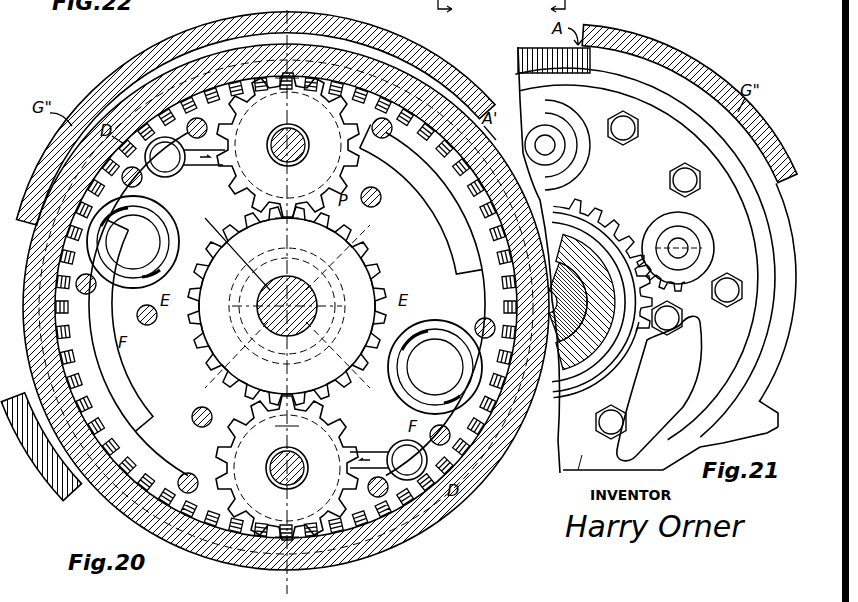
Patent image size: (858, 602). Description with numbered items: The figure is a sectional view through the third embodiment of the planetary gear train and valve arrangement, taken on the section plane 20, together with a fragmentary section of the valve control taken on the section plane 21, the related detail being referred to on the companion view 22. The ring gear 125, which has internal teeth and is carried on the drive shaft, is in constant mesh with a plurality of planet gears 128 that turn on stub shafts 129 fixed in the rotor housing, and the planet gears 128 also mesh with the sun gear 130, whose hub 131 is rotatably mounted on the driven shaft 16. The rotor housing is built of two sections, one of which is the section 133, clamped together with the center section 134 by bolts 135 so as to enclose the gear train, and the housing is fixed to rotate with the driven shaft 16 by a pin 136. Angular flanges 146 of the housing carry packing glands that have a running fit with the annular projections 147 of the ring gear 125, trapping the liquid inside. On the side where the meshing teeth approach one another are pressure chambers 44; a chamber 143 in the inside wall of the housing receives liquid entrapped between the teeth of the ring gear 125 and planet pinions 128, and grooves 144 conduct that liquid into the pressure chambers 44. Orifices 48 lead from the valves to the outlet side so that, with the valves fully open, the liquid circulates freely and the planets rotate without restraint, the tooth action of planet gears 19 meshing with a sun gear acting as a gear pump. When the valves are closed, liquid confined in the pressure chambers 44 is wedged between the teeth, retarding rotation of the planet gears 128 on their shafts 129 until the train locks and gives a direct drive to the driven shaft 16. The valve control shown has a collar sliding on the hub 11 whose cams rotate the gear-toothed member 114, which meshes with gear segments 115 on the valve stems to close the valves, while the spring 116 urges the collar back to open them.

In FIG. 21, the hub 11 is at (552, 382).
In FIG. 20, the driven shaft 16 is at (312, 272).
In FIG. 20, the planet gears 19 is at (289, 13).
In FIG. 20, the sun gear 20 is at (460, 12).
In FIG. 20, the section line 21 is at (545, 12).
In FIG. 20, the flange 22 is at (92, 56).
In FIG. 20, the pressure chambers 44 is at (172, 172).
In FIG. 20, the orifices 48 is at (100, 312).
In FIG. 21, the gear-toothed member 114 is at (622, 376).
In FIG. 21, the gear segments 115 is at (656, 214).
In FIG. 21, the spring 116 is at (580, 212).
In FIG. 20, the ring gear 125 is at (478, 455).
In FIG. 20, the planet gears 128 is at (287, 306).
In FIG. 20, the stub shafts 129 is at (293, 307).
In FIG. 20, the sun gear 130 is at (298, 378).
In FIG. 21, the hub 131 is at (592, 301).
In FIG. 20, the rotor housing section 133 is at (442, 214).
In FIG. 21, the rotor housing section 133 is at (578, 470).
In FIG. 20, the center section 134 is at (138, 304).
In FIG. 20, the bolts 135 is at (470, 258).
In FIG. 21, the bolts 135 is at (684, 172).
In FIG. 20, the pin 136 is at (330, 322).
In FIG. 20, the chamber 143 is at (286, 314).
In FIG. 20, the grooves 144 is at (280, 114).
In FIG. 21, the angular flanges 146 is at (733, 397).
In FIG. 21, the annular projections 147 is at (657, 85).